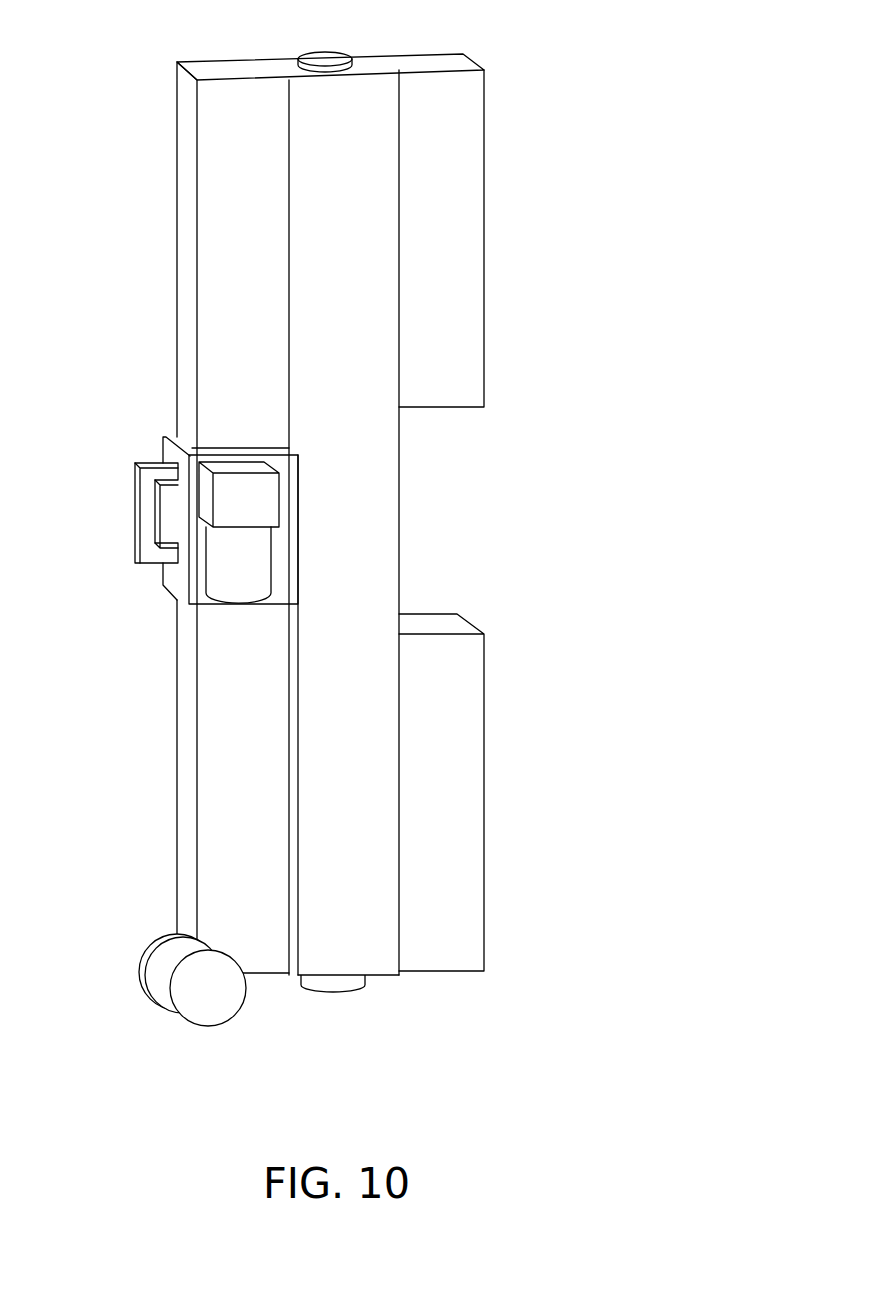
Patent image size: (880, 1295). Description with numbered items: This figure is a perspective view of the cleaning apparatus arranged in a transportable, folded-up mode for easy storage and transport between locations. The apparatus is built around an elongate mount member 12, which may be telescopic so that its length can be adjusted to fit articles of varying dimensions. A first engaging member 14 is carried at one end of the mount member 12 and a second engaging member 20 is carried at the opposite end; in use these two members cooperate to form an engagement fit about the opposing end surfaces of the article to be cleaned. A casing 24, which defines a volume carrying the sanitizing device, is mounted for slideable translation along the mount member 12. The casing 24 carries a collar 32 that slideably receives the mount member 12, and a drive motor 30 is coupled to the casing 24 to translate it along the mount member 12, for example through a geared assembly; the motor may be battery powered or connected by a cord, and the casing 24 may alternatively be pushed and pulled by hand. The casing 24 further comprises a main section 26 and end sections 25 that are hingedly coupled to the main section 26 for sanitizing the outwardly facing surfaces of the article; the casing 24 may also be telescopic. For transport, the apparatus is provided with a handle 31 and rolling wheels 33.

The first engaging member 14 is at (387, 63).
The mount member 12 is at (190, 347).
The casing 24 is at (418, 477).
The end sections 25 is at (459, 275).
The main section 26 is at (358, 550).
The second engaging member 20 is at (442, 971).
The drive motor 30 is at (232, 560).
The handle 31 is at (138, 527).
The collar 32 is at (163, 437).
The rolling wheels 33 is at (205, 990).